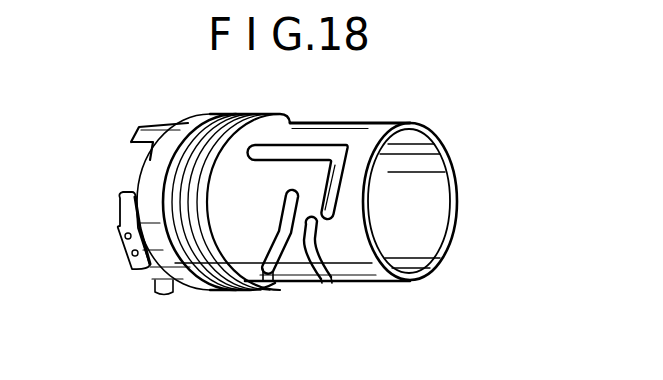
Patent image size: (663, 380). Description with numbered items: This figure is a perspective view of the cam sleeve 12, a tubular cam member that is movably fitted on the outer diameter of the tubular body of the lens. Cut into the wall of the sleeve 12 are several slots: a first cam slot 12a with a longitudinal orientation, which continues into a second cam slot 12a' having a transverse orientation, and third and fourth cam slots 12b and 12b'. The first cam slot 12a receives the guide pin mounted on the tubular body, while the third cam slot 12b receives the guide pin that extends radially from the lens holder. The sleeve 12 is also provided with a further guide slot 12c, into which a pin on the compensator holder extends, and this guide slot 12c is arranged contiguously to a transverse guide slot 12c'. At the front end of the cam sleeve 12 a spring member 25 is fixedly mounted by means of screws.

The cam sleeve 12 is at (363, 264).
The first cam slot 12a is at (298, 146).
The second cam slot 12a' is at (354, 166).
The third cam slot 12b is at (264, 232).
The fourth cam slot 12b' is at (283, 294).
The guide slot 12c is at (279, 287).
The transverse guide slot 12c' is at (323, 315).
The spring member 25 is at (128, 215).